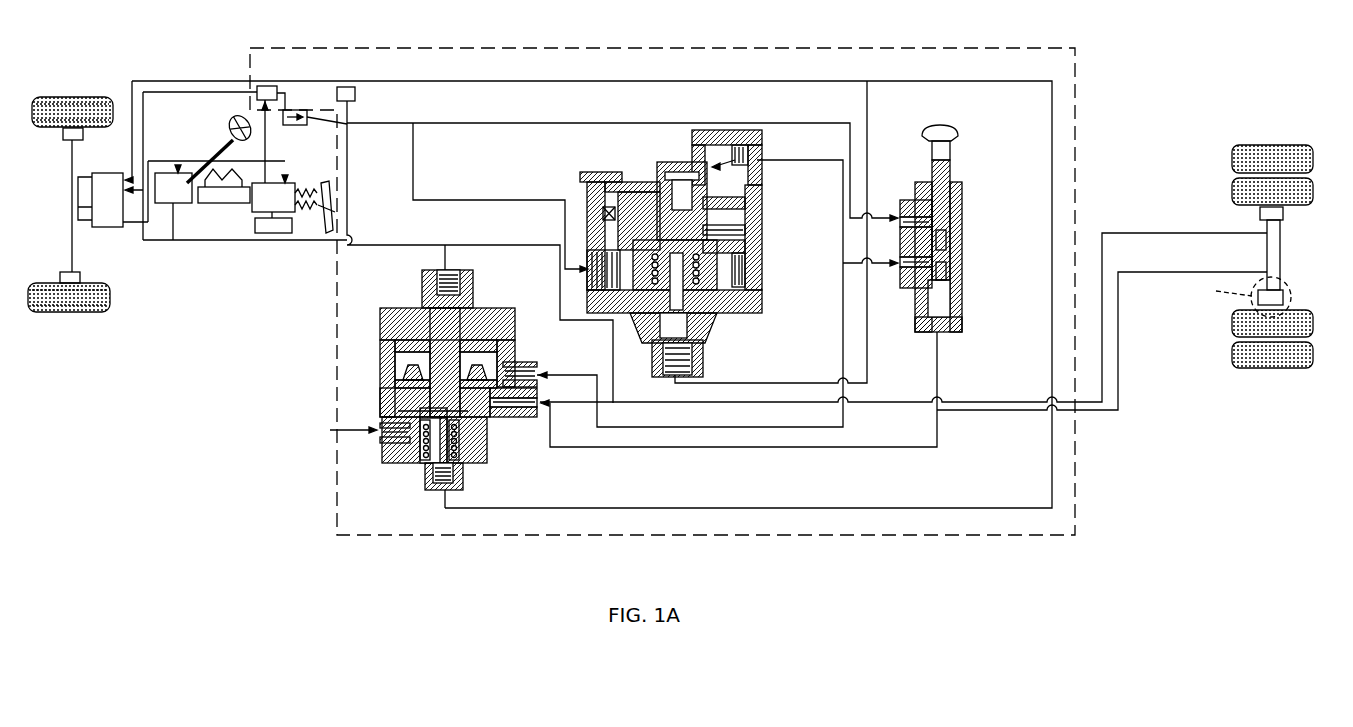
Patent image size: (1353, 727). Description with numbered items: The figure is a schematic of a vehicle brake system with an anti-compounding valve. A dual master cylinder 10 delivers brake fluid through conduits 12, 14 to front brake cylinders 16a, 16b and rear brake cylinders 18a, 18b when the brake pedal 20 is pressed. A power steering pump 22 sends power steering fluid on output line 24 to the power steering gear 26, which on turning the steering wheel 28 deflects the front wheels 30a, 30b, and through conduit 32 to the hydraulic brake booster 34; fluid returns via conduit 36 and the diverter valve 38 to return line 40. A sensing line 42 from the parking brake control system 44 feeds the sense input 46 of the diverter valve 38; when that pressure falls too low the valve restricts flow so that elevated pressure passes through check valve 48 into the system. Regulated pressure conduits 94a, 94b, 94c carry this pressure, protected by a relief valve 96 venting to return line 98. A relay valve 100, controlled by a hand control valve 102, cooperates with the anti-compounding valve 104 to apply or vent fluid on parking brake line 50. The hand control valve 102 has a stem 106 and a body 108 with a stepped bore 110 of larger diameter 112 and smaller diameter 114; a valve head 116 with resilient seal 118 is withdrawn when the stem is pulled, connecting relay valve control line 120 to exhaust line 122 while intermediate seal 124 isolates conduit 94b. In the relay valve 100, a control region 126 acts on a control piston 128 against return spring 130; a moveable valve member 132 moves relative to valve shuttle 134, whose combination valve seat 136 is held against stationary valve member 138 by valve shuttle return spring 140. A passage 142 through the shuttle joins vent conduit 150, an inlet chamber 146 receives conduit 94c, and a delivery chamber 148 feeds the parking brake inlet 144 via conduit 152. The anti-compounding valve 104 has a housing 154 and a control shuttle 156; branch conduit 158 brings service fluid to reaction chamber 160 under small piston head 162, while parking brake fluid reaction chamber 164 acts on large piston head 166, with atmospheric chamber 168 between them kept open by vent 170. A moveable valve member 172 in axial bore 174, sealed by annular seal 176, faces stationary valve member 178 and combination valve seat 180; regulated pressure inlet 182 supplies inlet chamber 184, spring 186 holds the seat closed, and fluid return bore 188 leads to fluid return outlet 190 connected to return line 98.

The dual master cylinder 10 is at (199, 204).
The conduit 12 is at (171, 242).
The conduit 14 is at (229, 204).
The front brake cylinder 16a is at (66, 141).
The front brake cylinder 16b is at (60, 276).
The rear brake cylinder 18a is at (1284, 216).
The rear brake cylinder 18b is at (1290, 303).
The brake pedal 20 is at (334, 208).
The power steering pump 22 is at (117, 173).
The power steering output line 24 is at (138, 240).
The power steering gear 26 is at (174, 204).
The steering wheel 28 is at (223, 146).
The front wheel 30a is at (68, 97).
The front wheel 30b is at (53, 312).
The conduit 32 is at (278, 176).
The hydraulic brake booster 34 is at (315, 209).
The conduit 36 is at (240, 119).
The diverter valve 38 is at (267, 86).
The return line 40 is at (167, 93).
The sensing line 42 is at (300, 109).
The parking brake control system 44 is at (978, 493).
The sense input 46 is at (283, 93).
The check valve 48 is at (347, 126).
The parking brake line 50 is at (1192, 234).
The regulated pressure conduit 94a is at (347, 178).
The regulated pressure conduit 94b is at (512, 123).
The regulated pressure conduit 94c is at (415, 199).
The relief valve 96 is at (356, 95).
The power steering fluid return line 98 is at (440, 82).
The relay valve 100 is at (782, 320).
The hand control valve 102 is at (968, 267).
The anti-compounding valve 104 is at (533, 424).
The stem 106 is at (955, 172).
The body 108 is at (953, 217).
The stepped bore 110 is at (912, 208).
The larger diameter 112 is at (962, 308).
The smaller diameter 114 is at (930, 188).
The valve head 116 is at (905, 272).
The resilient seal 118 is at (938, 281).
The relay valve control line 120 is at (898, 261).
The exhaust line 122 is at (600, 448).
The intermediate seal 124 is at (940, 247).
The control region 126 is at (758, 156).
The control piston 128 is at (612, 229).
The return spring 130 is at (634, 203).
The moveable valve member 132 is at (752, 208).
The valve shuttle 134 is at (680, 298).
The combination valve seat 136 is at (710, 236).
The stationary valve member 138 is at (725, 257).
The valve shuttle return spring 140 is at (712, 268).
The passage 142 is at (637, 336).
The parking brake inlet 144 is at (538, 376).
The inlet chamber 146 is at (724, 277).
The delivery chamber 148 is at (594, 232).
The vent conduit 150 is at (867, 366).
The conduit 152 is at (846, 426).
The housing 154 is at (518, 347).
The control shuttle 156 is at (433, 340).
The branch conduit 158 is at (447, 250).
The service brake fluid reaction chamber 160 is at (434, 294).
The small piston head 162 is at (454, 296).
The parking brake fluid reaction chamber 164 is at (397, 357).
The large piston head 166 is at (470, 347).
The atmospheric chamber 168 is at (408, 342).
The vent 170 is at (505, 325).
The moveable valve member 172 is at (437, 413).
The axial bore 174 is at (452, 377).
The annular seal 176 is at (462, 375).
The stationary valve member 178 is at (398, 411).
The combination valve seat 180 is at (465, 416).
The regulated pressure inlet 182 is at (377, 437).
The regulated pressure inlet chamber 184 is at (420, 444).
The spring 186 is at (461, 441).
The fluid return bore 188 is at (440, 461).
The fluid return outlet 190 is at (447, 494).